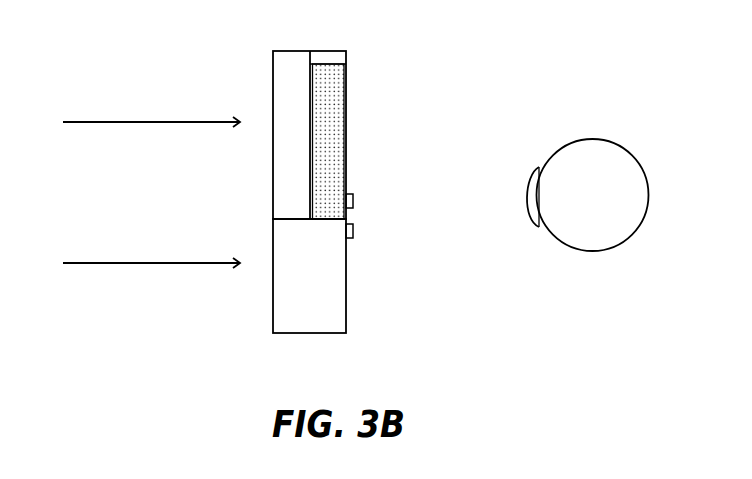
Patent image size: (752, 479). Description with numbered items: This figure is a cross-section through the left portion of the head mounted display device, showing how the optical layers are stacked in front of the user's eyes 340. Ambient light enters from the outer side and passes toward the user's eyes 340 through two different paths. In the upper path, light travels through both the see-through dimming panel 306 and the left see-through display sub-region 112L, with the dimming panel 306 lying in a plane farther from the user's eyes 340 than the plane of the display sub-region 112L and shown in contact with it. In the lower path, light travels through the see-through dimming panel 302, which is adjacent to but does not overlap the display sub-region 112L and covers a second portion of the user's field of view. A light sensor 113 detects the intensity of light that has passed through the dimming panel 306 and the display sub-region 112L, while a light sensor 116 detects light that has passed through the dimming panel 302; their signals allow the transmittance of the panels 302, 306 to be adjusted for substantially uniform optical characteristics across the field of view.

The see-through dimming panel 306 is at (296, 62).
The left see-through display sub-region 112L is at (345, 80).
The light sensor 113 is at (355, 201).
The light sensor 116 is at (355, 237).
The see-through dimming panel 302 is at (310, 322).
The user's eyes 340 is at (590, 150).